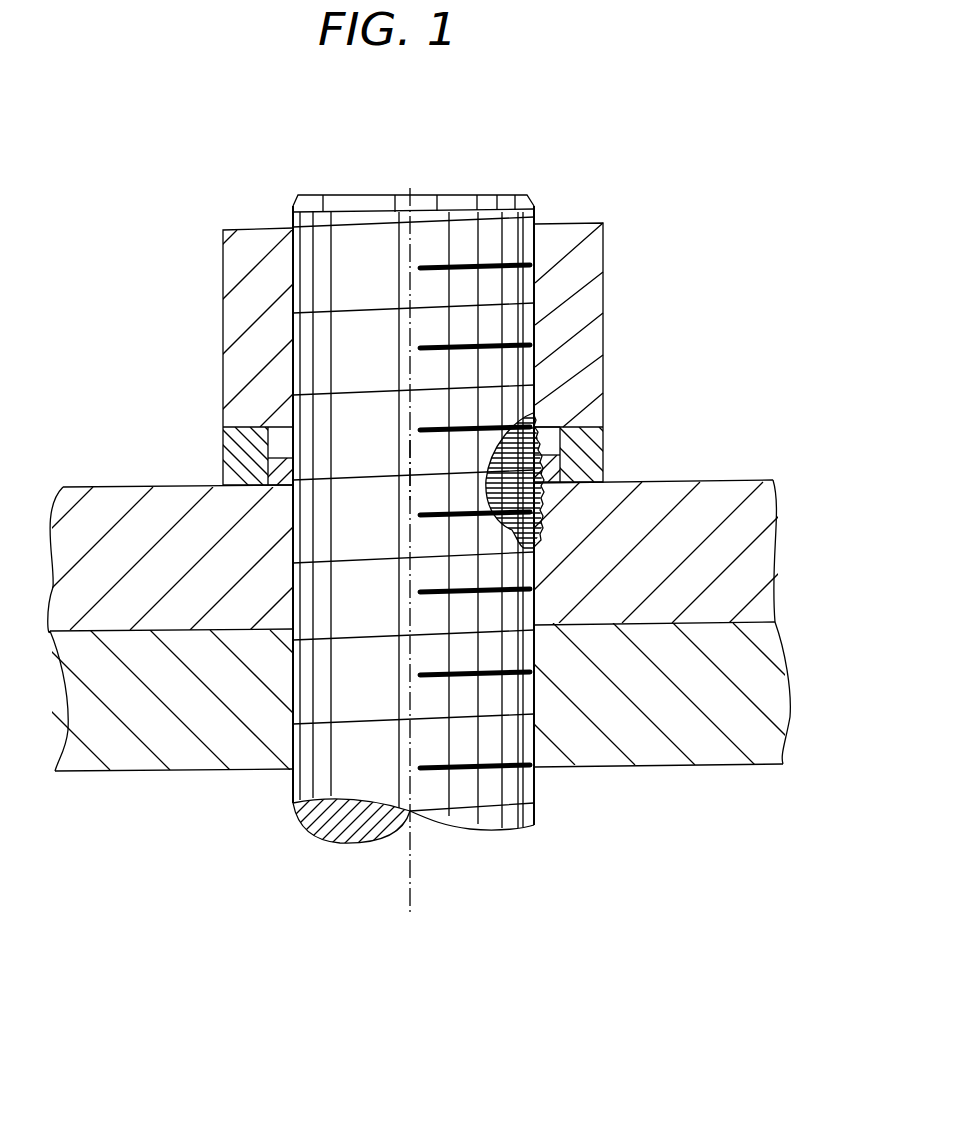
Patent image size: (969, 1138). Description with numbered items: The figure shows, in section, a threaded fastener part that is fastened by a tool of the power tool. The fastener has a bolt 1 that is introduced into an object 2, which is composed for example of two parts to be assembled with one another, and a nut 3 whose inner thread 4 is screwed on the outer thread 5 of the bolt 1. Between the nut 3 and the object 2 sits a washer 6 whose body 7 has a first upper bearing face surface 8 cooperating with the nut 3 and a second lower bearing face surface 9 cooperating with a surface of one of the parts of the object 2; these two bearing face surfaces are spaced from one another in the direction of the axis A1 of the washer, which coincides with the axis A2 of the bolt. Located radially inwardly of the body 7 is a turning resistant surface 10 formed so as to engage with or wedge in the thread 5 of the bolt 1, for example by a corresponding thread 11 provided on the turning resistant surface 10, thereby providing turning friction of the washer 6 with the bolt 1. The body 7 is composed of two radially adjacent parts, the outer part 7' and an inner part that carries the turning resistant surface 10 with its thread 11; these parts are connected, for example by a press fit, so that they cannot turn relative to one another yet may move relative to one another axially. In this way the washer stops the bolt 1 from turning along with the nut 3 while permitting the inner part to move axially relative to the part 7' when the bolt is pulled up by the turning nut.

The bolt 1 is at (270, 572).
The object 2 is at (814, 716).
The nut 3 is at (231, 383).
The inner thread 4 is at (293, 312).
The outer thread 5 is at (535, 418).
The washer 6 is at (486, 455).
The body 7 is at (607, 445).
The part 7' is at (633, 457).
The first upper bearing face surface 8 is at (260, 425).
The second lower bearing face surface 9 is at (247, 490).
The turning resistant surface 10 is at (273, 483).
The thread 11 is at (548, 508).
The axis of the washer A1 is at (410, 188).
The axis of the bolt A2 is at (404, 468).